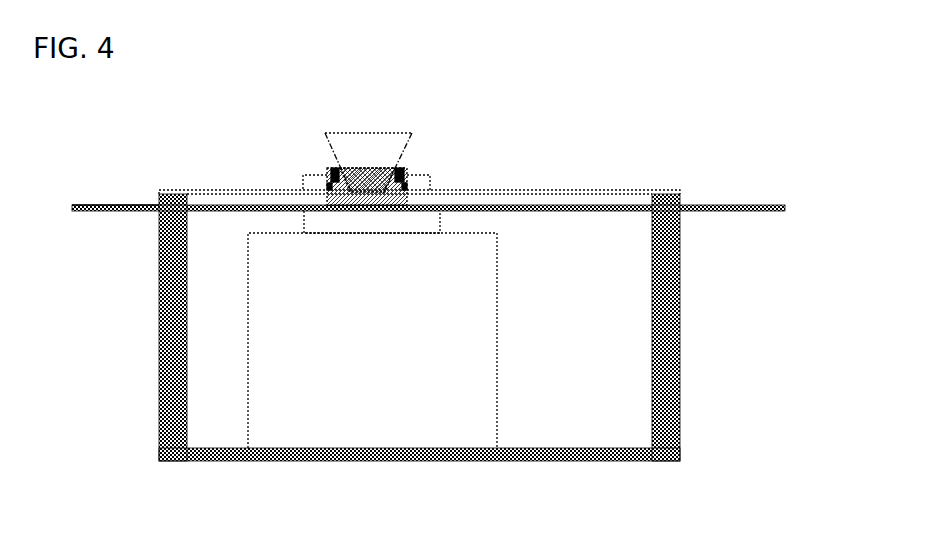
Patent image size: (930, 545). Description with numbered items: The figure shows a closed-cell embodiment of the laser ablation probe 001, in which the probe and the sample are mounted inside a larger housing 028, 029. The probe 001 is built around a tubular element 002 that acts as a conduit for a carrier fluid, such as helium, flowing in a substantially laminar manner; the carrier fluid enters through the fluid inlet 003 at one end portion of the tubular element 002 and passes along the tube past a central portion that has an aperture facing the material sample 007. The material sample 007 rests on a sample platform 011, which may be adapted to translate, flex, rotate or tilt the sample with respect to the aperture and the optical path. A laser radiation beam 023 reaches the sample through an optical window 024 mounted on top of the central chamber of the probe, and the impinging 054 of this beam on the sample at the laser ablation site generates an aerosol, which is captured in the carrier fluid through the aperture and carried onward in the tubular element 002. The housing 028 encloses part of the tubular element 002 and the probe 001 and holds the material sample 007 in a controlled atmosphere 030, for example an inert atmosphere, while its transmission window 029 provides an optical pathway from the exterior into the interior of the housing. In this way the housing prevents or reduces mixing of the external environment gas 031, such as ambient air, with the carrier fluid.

The laser ablation probe 001 is at (306, 161).
The tubular element 002 is at (441, 171).
The fluid inlet 003 is at (123, 159).
The material sample 007 is at (389, 250).
The sample platform 011 is at (374, 340).
The laser radiation beam 023 is at (402, 147).
The optical window 024 is at (336, 146).
The housing 028 is at (479, 327).
The transmission window 029 is at (419, 153).
The controlled atmosphere 030 is at (493, 273).
The external environment gas 031 is at (479, 416).
The impinging a laser beam 054 is at (411, 165).